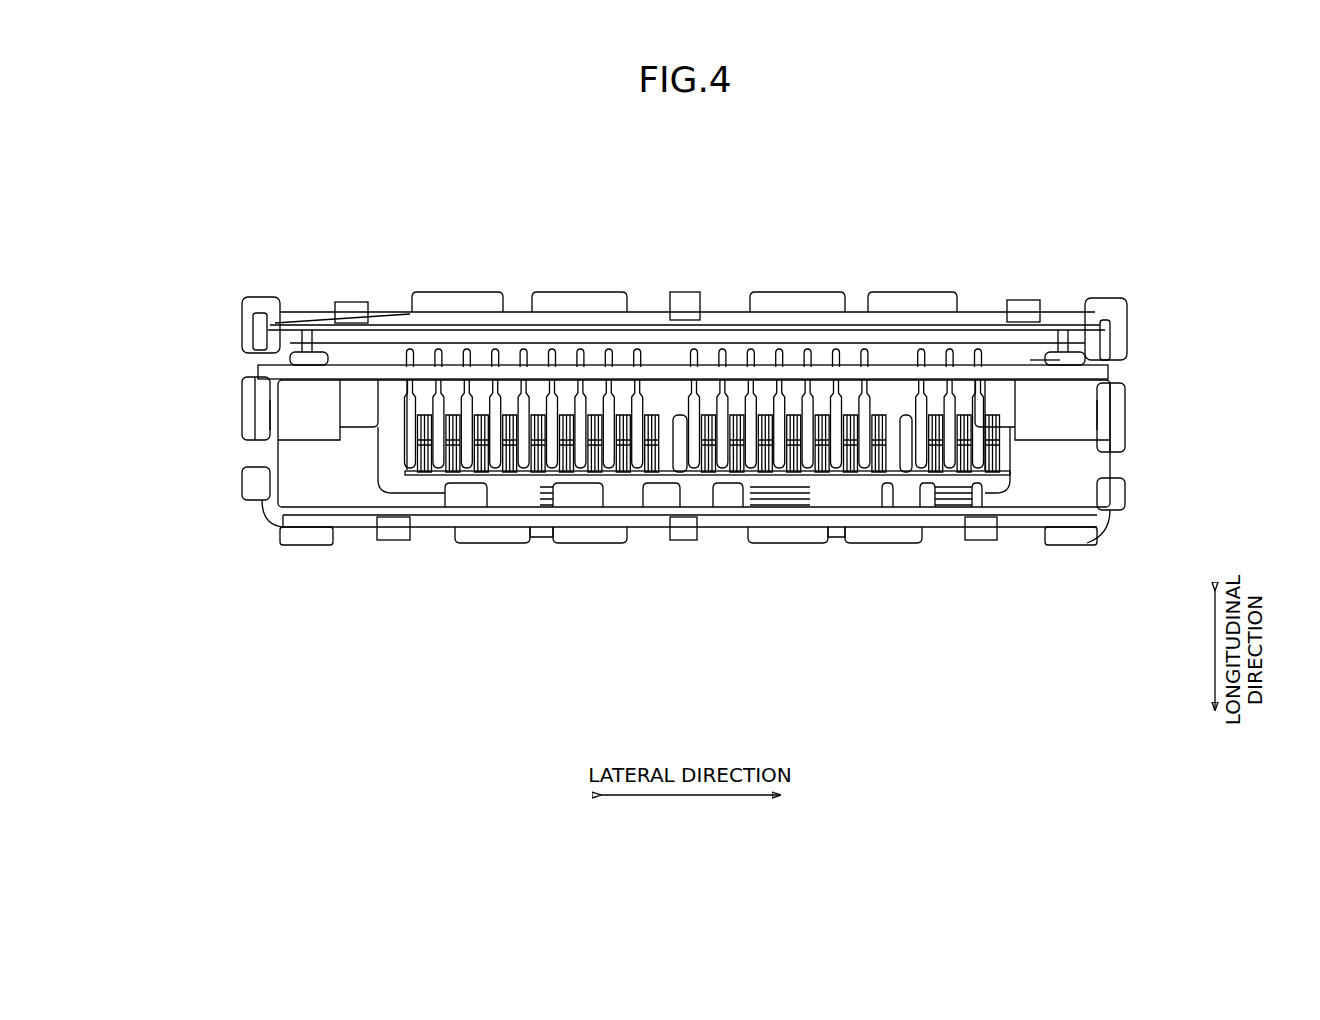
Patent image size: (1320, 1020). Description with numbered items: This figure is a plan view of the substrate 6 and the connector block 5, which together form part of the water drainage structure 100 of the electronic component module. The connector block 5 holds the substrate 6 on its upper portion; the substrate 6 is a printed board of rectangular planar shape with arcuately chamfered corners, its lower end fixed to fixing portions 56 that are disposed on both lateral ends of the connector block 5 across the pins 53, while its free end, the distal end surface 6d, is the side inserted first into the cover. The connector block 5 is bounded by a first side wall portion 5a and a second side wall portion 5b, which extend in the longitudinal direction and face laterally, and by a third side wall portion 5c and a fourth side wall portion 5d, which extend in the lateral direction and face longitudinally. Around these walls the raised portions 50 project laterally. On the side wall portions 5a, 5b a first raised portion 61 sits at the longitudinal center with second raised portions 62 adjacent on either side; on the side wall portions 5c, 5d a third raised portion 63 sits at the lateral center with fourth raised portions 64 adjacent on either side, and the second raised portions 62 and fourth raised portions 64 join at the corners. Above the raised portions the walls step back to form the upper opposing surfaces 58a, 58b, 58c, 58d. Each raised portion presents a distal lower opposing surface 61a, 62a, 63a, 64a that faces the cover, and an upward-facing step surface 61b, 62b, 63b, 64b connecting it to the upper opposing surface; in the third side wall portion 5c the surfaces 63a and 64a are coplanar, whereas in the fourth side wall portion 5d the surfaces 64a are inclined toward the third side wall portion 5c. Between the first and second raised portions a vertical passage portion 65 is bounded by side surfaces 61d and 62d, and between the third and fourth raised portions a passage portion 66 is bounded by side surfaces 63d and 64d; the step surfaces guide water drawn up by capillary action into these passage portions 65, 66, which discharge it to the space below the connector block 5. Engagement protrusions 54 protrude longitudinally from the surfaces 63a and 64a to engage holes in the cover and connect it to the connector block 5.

The water drainage structure 100 is at (300, 178).
The raised portions 50 is at (128, 523).
The connector block 5 is at (420, 300).
The first side wall portion 5a is at (227, 383).
The second side wall portion 5b is at (1167, 378).
The third side wall portion 5c is at (530, 700).
The fourth side wall portion 5d is at (675, 197).
The substrate 6 is at (512, 356).
The distal end surface 6d is at (1038, 358).
The pins 53 is at (610, 362).
The engagement protrusions 54 is at (352, 302).
The fixing portions 56 is at (315, 430).
The first upper opposing surface 58a is at (253, 418).
The second upper opposing surface 58b is at (1112, 395).
The third upper opposing surface 58c is at (622, 513).
The fourth upper opposing surface 58d is at (662, 330).
The first raised portion 61 is at (247, 427).
The first lower opposing surface 61a is at (245, 393).
The first step surface 61b is at (247, 440).
The side surface of first raised portion 61d is at (300, 355).
The second raised portion 62 is at (250, 348).
The second lower opposing surface 62a is at (252, 342).
The second step surface 62b is at (258, 320).
The side surface of second raised portion 62d is at (262, 335).
The third raised portion 63 is at (722, 293).
The third lower opposing surface 63a is at (655, 325).
The third step surface 63b is at (598, 325).
The side surface of third raised portion 63d is at (528, 320).
The fourth raised portion 64 is at (345, 316).
The fourth lower opposing surface 64a is at (445, 312).
The fourth step surface 64b is at (348, 318).
The side surface of fourth raised portion 64d is at (508, 312).
The passage portion 65 is at (253, 365).
The passage portion 66 is at (520, 298).